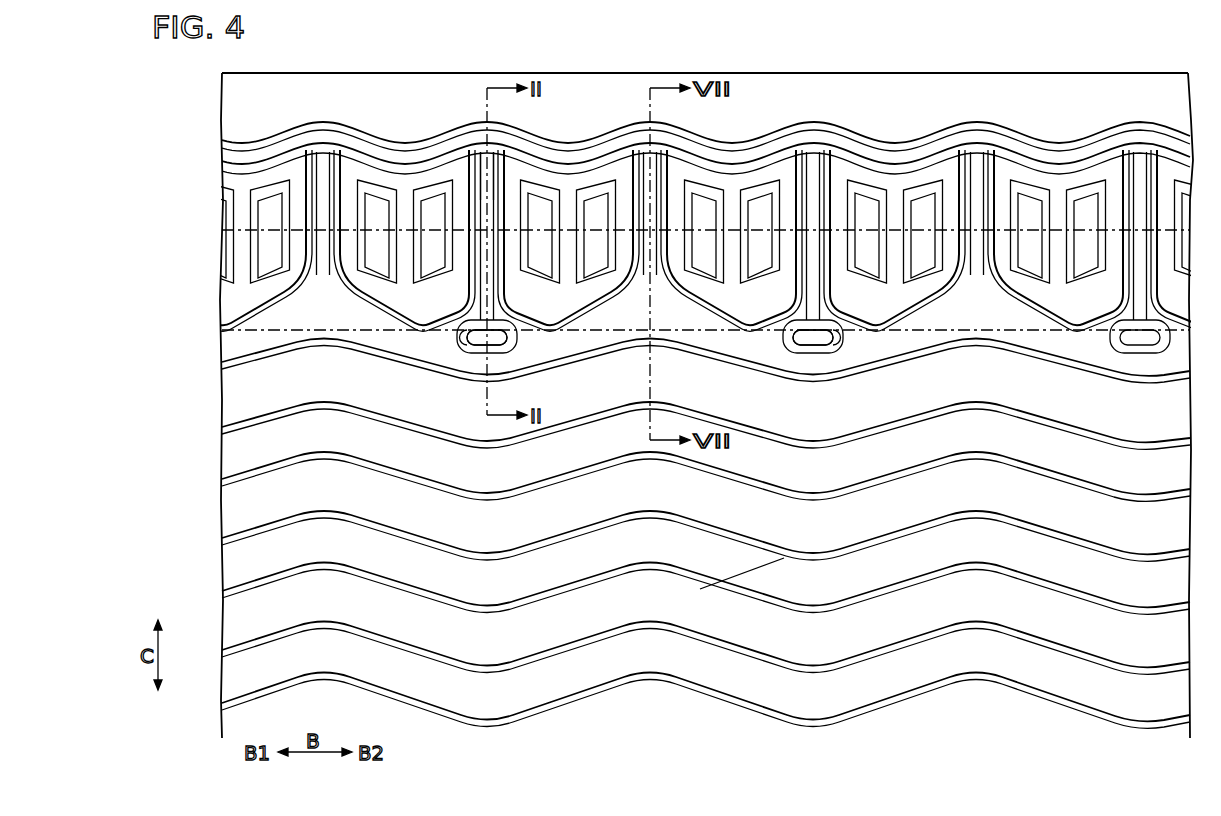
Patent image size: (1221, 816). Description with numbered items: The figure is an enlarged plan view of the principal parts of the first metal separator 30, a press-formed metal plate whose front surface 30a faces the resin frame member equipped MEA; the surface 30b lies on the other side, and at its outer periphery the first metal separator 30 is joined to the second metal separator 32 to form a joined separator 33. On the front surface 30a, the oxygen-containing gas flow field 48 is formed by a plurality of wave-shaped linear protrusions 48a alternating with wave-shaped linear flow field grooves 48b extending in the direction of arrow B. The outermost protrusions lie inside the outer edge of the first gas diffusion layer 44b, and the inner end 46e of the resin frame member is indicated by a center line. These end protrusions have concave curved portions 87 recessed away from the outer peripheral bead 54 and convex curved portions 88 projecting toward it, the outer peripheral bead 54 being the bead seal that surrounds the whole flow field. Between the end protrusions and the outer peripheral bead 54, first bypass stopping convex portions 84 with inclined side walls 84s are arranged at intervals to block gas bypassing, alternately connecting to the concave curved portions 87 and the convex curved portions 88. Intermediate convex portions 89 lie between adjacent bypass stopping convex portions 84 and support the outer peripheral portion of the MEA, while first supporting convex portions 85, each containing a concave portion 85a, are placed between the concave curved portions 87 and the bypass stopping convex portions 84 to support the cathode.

The first metal separator 30 is at (1087, 63).
The front surface 30a is at (957, 90).
The second plate portion 30b is at (998, 90).
The second metal separator 32 is at (1126, 64).
The joined separator 33 is at (373, 30).
The first gas diffusion layer 44b is at (298, 233).
The inner end of the resin frame member 46e is at (274, 332).
The oxygen-containing gas flow field 48 is at (799, 582).
The linear protrusion 48a is at (920, 337).
The linear flow field groove 48b is at (868, 414).
The outer peripheral bead 54 is at (805, 140).
The first bypass stopping convex portion 84 is at (490, 185).
The side wall 84s is at (473, 217).
The first supporting convex portion 85 is at (483, 330).
The concave portion 85a is at (468, 337).
The concave curved portion 87 is at (503, 362).
The convex curved portion 88 is at (322, 308).
The intermediate convex portion 89 is at (433, 208).